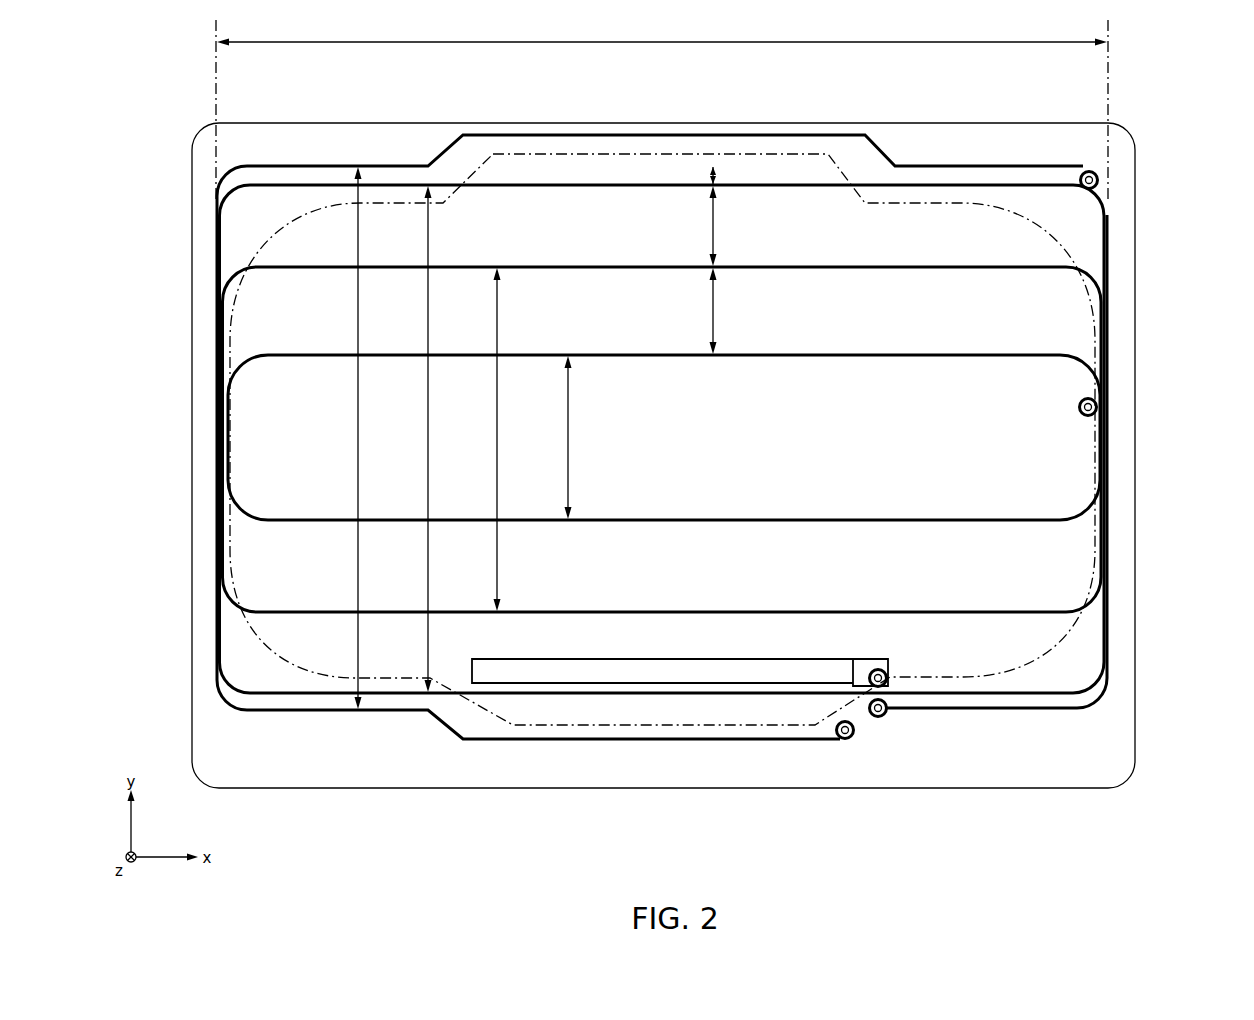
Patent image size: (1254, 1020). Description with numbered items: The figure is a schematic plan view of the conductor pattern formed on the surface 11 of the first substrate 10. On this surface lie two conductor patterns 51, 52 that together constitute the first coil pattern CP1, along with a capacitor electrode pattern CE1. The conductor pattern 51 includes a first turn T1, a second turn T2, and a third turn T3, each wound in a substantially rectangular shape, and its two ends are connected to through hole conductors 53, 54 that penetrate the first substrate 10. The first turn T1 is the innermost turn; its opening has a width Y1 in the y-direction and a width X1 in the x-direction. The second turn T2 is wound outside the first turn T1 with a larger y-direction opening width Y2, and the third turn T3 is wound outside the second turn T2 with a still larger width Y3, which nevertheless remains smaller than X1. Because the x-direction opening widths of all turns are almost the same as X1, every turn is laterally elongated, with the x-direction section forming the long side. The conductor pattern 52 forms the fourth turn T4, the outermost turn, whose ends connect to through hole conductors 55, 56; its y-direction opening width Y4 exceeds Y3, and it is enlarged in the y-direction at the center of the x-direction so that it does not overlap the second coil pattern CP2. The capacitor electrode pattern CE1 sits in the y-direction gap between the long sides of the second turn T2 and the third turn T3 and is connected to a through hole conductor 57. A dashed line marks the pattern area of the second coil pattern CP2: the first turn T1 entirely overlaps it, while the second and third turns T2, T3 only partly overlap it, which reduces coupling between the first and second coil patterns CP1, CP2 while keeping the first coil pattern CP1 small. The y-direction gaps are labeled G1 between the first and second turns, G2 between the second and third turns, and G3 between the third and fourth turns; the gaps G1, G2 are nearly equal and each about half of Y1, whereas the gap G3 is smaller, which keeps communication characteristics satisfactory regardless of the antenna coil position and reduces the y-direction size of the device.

The first substrate 10 is at (1137, 196).
The surface 11 is at (698, 427).
The conductor pattern 51 is at (662, 406).
The conductor pattern 52 is at (662, 446).
The through hole conductor 53 is at (1098, 405).
The through hole conductor 54 is at (885, 712).
The through hole conductor 55 is at (1098, 178).
The through hole conductor 56 is at (851, 737).
The through hole conductor 57 is at (889, 677).
The capacitor electrode pattern CE1 is at (596, 664).
The first coil pattern CP1 is at (720, 446).
The second coil pattern CP2 is at (276, 246).
The first turn T1 is at (826, 353).
The second turn T2 is at (803, 265).
The third turn T3 is at (843, 187).
The fourth turn T4 is at (944, 165).
The opening width in the x-direction X1 is at (662, 107).
The opening width of the first turn Y1 is at (583, 437).
The opening width of the second turn Y2 is at (512, 439).
The opening width of the third turn Y3 is at (444, 439).
The opening width of the fourth turn Y4 is at (373, 438).
The gap G1 is at (728, 311).
The gap G2 is at (729, 226).
The gap G3 is at (730, 172).